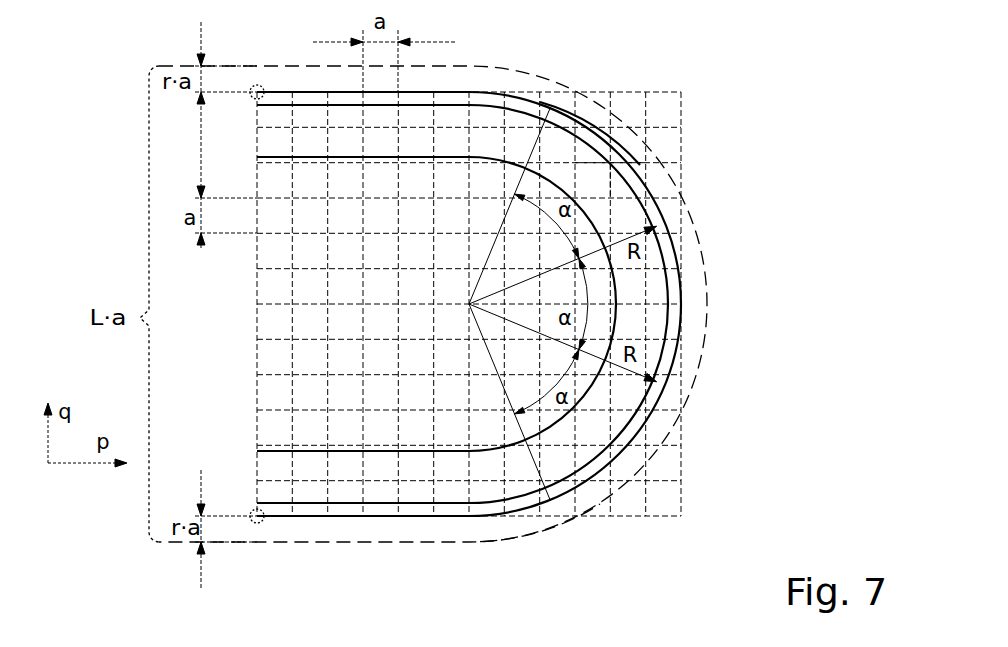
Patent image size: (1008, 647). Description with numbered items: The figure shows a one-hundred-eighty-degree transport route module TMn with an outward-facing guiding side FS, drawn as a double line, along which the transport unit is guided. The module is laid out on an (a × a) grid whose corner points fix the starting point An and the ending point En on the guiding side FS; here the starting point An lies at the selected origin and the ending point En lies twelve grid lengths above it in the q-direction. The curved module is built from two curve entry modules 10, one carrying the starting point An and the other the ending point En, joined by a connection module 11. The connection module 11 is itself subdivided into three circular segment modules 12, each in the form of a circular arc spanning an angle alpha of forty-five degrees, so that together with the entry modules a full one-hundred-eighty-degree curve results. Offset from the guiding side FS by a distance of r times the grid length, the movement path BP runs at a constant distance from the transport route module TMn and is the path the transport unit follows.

The curve entry module 10 is at (322, 130).
The connection module 11 is at (678, 257).
The circular segment module 12 is at (655, 192).
The ending point En is at (253, 100).
The starting point An is at (254, 510).
The guiding side FS is at (620, 152).
The transport route module TMn is at (597, 185).
The movement path BP is at (543, 533).